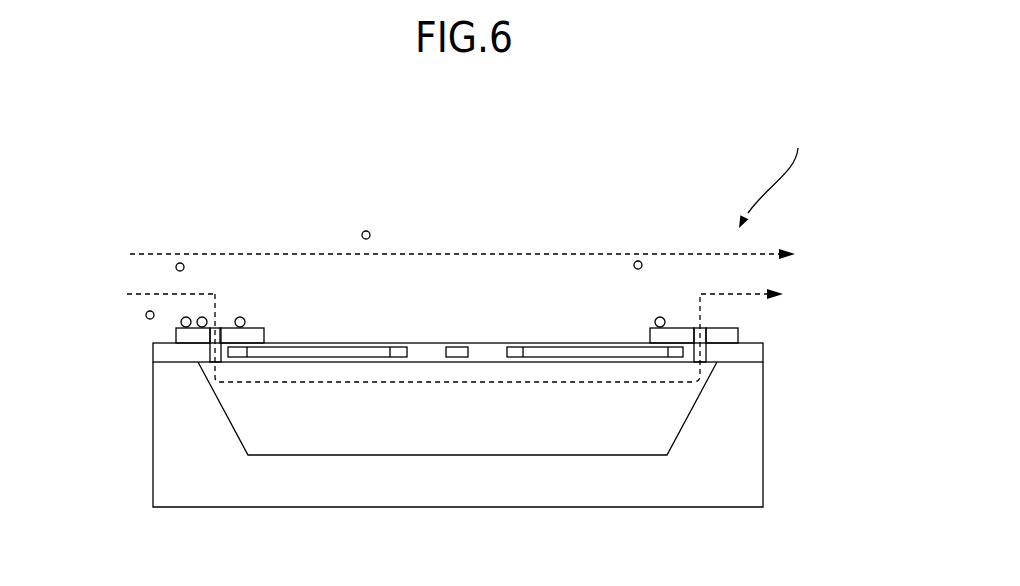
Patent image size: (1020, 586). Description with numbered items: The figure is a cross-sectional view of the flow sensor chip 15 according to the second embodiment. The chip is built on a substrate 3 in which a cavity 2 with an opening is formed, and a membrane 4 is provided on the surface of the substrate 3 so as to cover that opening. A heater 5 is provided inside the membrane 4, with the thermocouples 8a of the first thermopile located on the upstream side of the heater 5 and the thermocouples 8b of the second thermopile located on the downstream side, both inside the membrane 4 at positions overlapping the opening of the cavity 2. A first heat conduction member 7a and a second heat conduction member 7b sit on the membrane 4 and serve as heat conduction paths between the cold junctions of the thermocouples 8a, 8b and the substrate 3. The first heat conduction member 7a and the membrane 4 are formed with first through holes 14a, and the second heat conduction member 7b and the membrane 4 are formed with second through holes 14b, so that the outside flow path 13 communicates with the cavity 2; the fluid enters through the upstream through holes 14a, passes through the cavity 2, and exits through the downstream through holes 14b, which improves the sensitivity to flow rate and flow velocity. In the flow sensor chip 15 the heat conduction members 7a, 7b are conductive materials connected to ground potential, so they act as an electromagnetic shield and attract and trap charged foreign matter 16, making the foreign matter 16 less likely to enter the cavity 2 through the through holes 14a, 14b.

The cavity 2 is at (496, 437).
The substrate 3 is at (763, 465).
The membrane 4 is at (763, 352).
The heater 5 is at (456, 347).
The first heat conduction member 7a is at (264, 328).
The second heat conduction member 7b is at (691, 328).
The thermocouples of the first thermopile 8a is at (333, 347).
The thermocouples of the second thermopile 8b is at (594, 347).
The flow path 13 is at (548, 283).
The first through holes 14a is at (210, 337).
The second through holes 14b is at (707, 333).
The flow sensor chip 15 is at (813, 137).
The foreign matter 16 is at (238, 317).